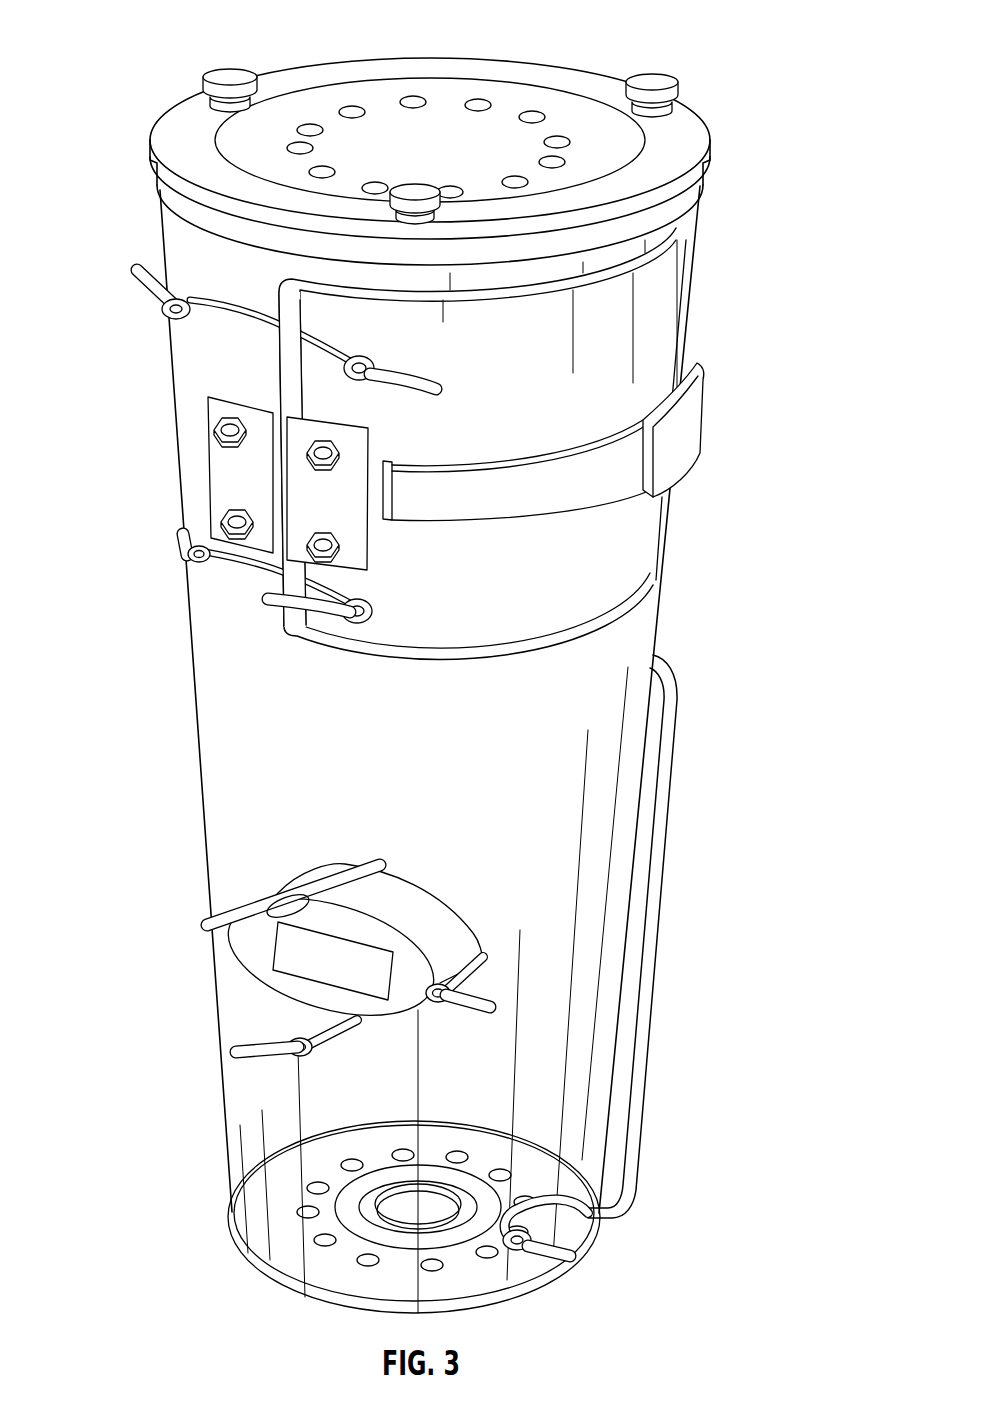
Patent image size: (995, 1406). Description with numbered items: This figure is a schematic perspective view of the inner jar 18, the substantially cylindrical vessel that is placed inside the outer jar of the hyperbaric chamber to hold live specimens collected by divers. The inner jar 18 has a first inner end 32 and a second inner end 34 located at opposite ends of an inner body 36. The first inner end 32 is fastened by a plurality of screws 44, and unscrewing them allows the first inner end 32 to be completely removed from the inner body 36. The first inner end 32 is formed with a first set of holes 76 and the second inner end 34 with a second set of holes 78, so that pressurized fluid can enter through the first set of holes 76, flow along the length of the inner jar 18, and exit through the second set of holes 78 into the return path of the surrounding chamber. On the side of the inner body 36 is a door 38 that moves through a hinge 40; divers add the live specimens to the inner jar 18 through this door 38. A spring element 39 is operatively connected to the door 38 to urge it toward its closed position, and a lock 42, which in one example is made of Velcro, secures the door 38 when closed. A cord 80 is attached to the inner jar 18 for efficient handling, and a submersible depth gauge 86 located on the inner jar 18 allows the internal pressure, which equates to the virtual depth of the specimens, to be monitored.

The inner jar 18 is at (178, 872).
The first inner end 32 is at (716, 148).
The second inner end 34 is at (612, 1233).
The inner body 36 is at (198, 742).
The door 38 is at (723, 205).
The spring element 39 is at (209, 311).
The hinge 40 is at (207, 478).
The lock 42 is at (525, 505).
The screws 44 is at (215, 73).
The first set of holes 76 is at (480, 100).
The second set of holes 78 is at (457, 1152).
The cord 80 is at (672, 905).
The submersible depth gauge 86 is at (258, 991).